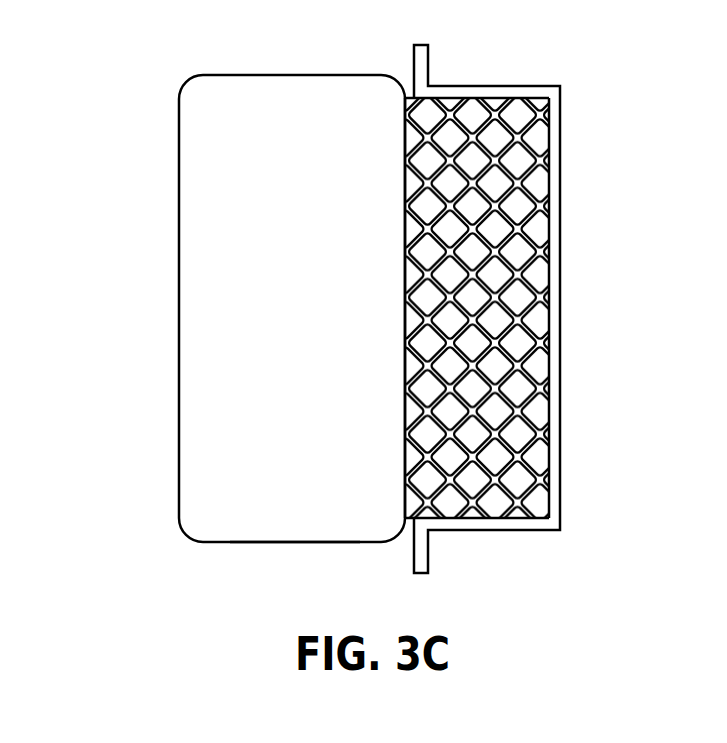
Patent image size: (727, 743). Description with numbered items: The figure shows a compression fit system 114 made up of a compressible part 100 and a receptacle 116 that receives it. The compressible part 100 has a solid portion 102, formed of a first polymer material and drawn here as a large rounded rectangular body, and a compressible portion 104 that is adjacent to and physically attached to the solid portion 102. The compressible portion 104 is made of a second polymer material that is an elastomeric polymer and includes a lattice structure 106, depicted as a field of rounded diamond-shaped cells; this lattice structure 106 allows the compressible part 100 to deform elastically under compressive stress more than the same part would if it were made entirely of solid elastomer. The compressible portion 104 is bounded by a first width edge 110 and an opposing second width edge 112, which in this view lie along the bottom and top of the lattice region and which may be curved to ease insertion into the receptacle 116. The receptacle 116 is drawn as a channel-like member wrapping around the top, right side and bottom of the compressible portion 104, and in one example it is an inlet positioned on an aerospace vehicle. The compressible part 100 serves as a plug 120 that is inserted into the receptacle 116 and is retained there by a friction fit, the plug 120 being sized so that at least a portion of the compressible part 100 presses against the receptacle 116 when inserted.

The compressible part 100 is at (273, 72).
The solid portion 102 is at (179, 410).
The compressible portion 104 is at (470, 110).
The lattice structure 106 is at (516, 508).
The first width edge 110 is at (548, 519).
The second width edge 112 is at (546, 106).
The compression fit system 114 is at (110, 58).
The receptacle 116 is at (561, 322).
The plug 120 is at (279, 546).